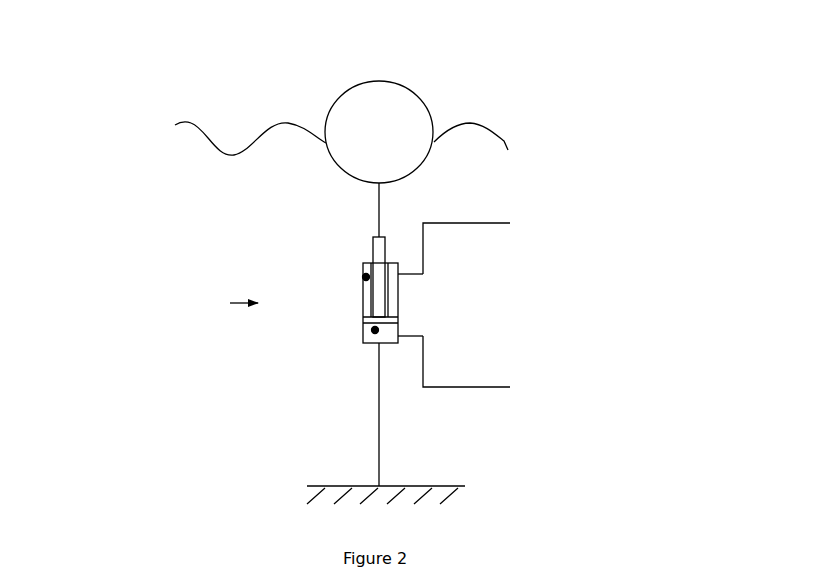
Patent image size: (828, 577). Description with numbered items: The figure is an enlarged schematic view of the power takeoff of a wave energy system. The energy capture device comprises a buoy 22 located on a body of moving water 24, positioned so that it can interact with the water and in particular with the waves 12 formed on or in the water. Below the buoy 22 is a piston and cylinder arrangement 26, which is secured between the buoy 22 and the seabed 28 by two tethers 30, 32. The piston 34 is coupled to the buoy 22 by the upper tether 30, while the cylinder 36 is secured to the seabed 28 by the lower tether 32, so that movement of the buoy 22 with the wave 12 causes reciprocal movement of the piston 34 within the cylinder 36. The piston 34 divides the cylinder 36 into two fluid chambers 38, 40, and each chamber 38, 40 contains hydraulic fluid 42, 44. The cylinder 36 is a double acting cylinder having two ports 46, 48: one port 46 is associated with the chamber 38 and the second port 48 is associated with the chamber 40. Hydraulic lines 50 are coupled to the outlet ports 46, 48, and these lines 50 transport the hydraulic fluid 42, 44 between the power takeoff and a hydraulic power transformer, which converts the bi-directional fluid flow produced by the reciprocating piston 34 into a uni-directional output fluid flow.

The waves 12 is at (196, 124).
The buoy 22 is at (399, 112).
The body of moving water 24 is at (176, 202).
The piston and cylinder arrangement 26 is at (230, 305).
The seabed 28 is at (464, 531).
The tether 30 is at (378, 213).
The tether 32 is at (377, 457).
The piston 34 is at (374, 241).
The cylinder 36 is at (400, 290).
The fluid chamber 38 is at (364, 277).
The fluid chamber 40 is at (373, 333).
The hydraulic fluid 42 is at (370, 298).
The hydraulic fluid 44 is at (387, 327).
The port 46 is at (399, 268).
The port 48 is at (399, 339).
The hydraulic lines 50 is at (487, 221).